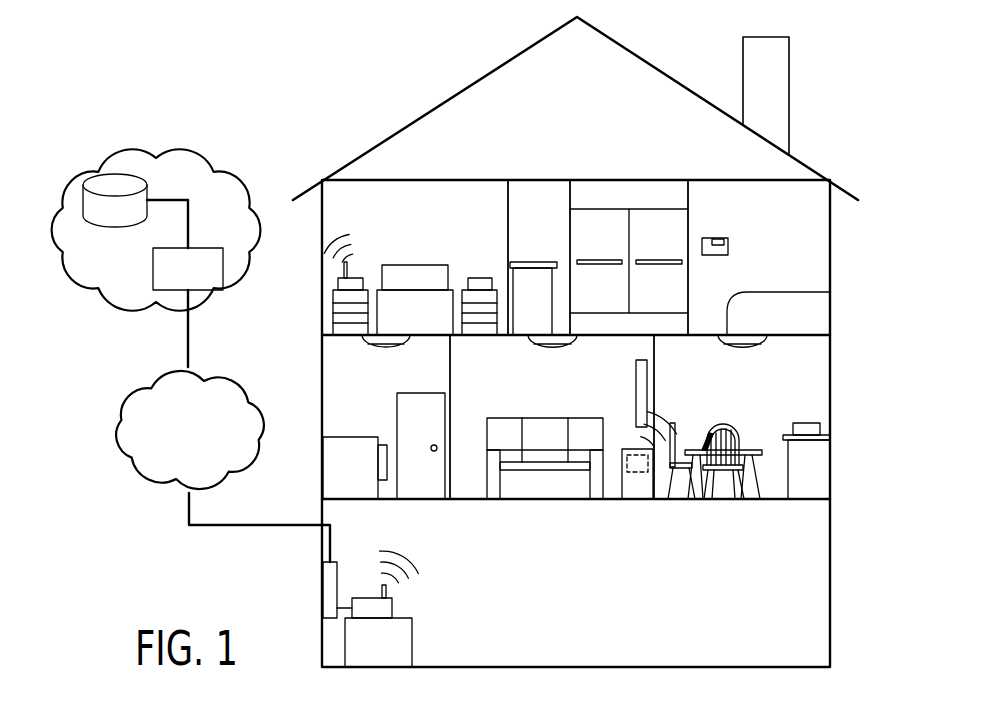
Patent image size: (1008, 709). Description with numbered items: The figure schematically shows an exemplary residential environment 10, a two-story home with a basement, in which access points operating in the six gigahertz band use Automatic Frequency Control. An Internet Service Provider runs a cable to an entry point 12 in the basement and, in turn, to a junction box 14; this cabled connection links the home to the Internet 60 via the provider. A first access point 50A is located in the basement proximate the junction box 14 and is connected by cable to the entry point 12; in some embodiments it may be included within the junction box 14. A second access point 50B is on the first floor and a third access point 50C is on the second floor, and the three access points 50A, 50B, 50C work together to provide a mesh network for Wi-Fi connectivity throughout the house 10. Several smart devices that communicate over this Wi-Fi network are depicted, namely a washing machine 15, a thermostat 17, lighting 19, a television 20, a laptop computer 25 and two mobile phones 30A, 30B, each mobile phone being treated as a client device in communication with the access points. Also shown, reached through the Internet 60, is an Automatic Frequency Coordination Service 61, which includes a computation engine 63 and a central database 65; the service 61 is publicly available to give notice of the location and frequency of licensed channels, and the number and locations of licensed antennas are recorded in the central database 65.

The residential environment 10 is at (850, 116).
The entry point 12 is at (318, 544).
The junction box 14 is at (330, 578).
The washing machine 15 is at (364, 482).
The thermostat 17 is at (718, 238).
The lighting 19 is at (385, 349).
The television 20 is at (636, 392).
The laptop computer 25 is at (703, 436).
The mobile phone 30A is at (801, 423).
The mobile phone 30B is at (478, 278).
The first access point 50A is at (392, 608).
The second access point 50B is at (636, 472).
The third access point 50C is at (348, 278).
The Internet 60 is at (130, 380).
The Automatic Frequency Coordination Service 61 is at (75, 162).
The computation engine 63 is at (205, 248).
The central database 65 is at (112, 226).